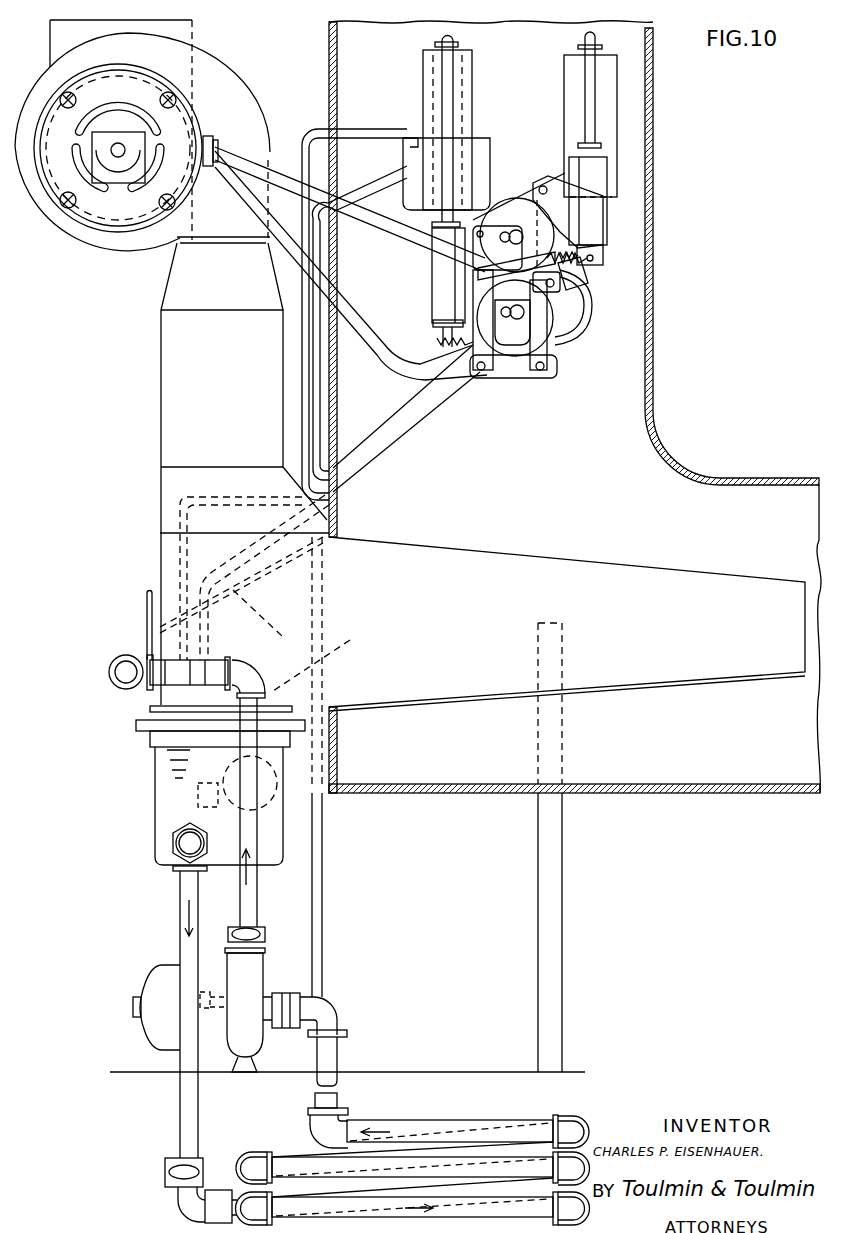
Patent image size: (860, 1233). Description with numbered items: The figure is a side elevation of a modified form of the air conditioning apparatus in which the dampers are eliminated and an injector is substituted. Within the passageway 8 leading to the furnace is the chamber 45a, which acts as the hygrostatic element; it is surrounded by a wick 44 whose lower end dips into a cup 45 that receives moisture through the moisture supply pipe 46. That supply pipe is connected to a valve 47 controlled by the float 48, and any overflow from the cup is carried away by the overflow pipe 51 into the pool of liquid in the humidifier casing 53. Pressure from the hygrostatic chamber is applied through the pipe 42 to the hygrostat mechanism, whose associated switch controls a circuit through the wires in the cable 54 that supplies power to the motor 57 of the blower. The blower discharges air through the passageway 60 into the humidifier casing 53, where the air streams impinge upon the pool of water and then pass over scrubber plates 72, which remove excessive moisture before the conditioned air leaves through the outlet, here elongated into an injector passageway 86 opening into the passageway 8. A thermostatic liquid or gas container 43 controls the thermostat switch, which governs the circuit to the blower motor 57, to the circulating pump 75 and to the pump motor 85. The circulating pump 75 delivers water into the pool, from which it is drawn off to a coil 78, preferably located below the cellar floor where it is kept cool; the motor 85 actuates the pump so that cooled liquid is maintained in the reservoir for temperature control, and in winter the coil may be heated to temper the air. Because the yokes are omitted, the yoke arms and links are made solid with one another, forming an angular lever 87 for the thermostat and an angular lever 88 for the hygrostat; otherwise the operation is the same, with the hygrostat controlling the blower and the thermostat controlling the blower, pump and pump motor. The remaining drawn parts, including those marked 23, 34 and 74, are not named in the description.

The passageway 8 is at (653, 243).
The roller hub 23 is at (513, 230).
The cylinder 34 is at (432, 278).
The pipe 42 is at (442, 33).
The thermostatic liquid or gas container 43 is at (563, 105).
The wick 44 is at (470, 117).
The cup 45 is at (490, 167).
The chamber 45a is at (462, 50).
The moisture supply pipe 46 is at (367, 126).
The valve 47 is at (155, 768).
The float 48 is at (270, 802).
The overflow pipe 51 is at (357, 185).
The humidifier casing 53 is at (158, 570).
The cable 54 is at (398, 364).
The motor 57 is at (120, 250).
The passageway 60 is at (163, 412).
The scrubber plates 72 is at (270, 620).
The blower housing 74 is at (193, 29).
The circulating pump 75 is at (265, 978).
The coil 78 is at (428, 1120).
The motor 85 is at (152, 978).
The injector passageway 86 is at (485, 551).
The angular lever 87 is at (490, 230).
The angular lever 88 is at (560, 337).